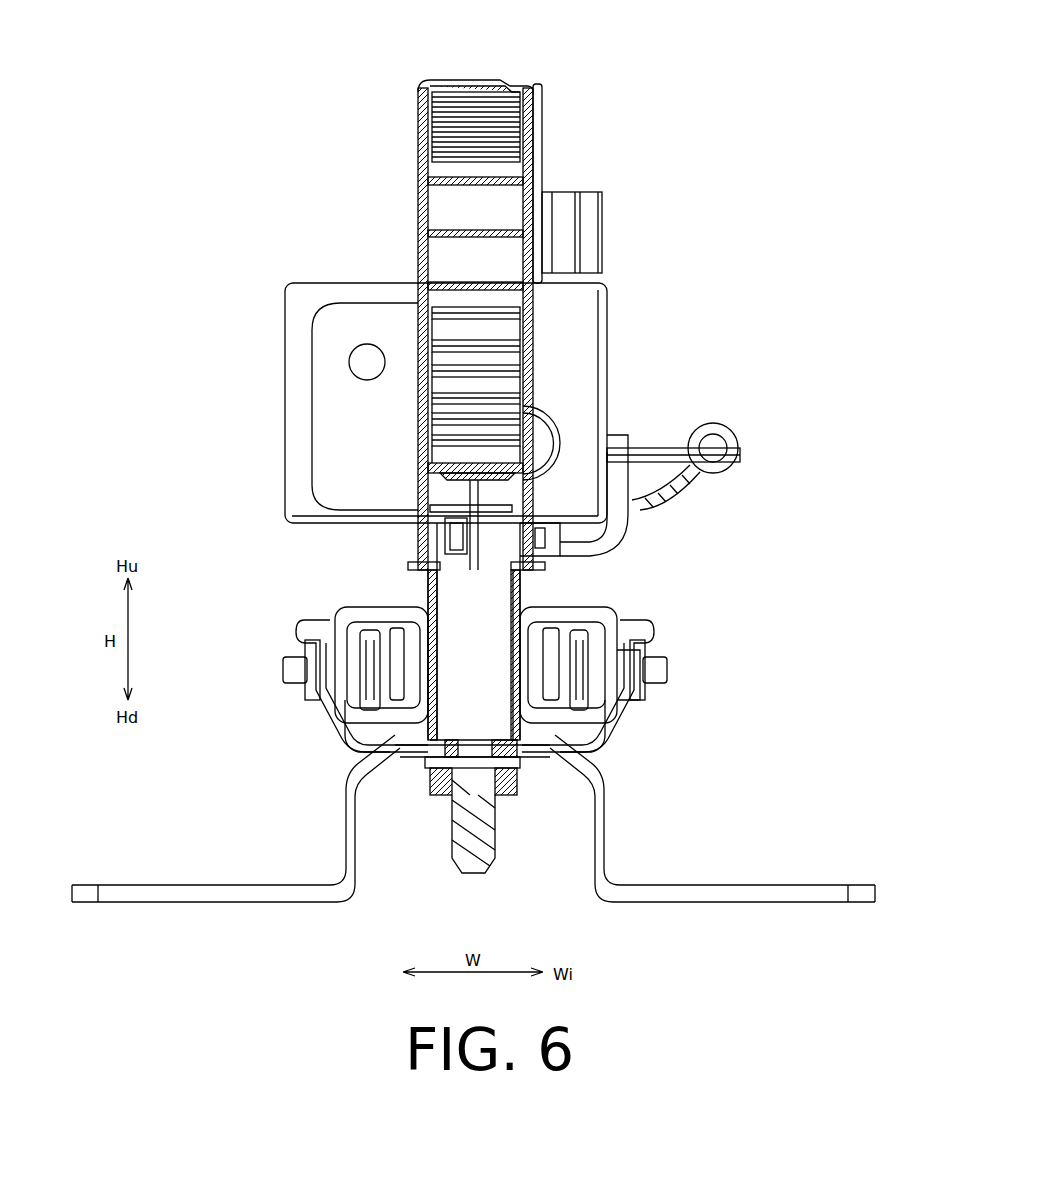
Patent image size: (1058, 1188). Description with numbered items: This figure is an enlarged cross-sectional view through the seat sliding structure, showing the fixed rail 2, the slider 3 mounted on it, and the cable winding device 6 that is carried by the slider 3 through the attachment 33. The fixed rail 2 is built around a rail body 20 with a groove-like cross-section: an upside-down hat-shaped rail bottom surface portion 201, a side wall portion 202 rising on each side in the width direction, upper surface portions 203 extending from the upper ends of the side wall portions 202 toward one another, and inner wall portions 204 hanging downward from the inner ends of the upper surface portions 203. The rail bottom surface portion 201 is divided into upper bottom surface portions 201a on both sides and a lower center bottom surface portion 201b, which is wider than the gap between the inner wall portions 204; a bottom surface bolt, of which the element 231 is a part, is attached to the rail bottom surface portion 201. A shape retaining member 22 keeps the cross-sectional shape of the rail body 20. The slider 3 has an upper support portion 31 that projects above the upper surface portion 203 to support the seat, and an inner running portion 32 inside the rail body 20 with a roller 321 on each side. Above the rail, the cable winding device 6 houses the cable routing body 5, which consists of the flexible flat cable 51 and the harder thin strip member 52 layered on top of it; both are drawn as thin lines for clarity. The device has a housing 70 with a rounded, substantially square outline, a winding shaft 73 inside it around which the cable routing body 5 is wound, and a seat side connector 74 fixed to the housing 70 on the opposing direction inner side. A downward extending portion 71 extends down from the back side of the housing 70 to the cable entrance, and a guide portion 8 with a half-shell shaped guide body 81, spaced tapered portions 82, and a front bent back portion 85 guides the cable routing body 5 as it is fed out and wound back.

The cable winding device 6 is at (346, 91).
The housing 70 is at (493, 78).
The winding shaft 73 is at (440, 206).
The cable routing body 5 is at (533, 120).
The seat side connector 74 is at (600, 192).
The attachment 33 is at (608, 345).
The downward extending portion 71 is at (445, 495).
The guide portion 8 is at (463, 525).
The guide body 81 is at (505, 530).
The tapered portions 82 is at (497, 615).
The upper support portion 31 is at (668, 424).
The slider 3 is at (708, 510).
The fixed rail 2 is at (745, 580).
The upper surface portions 203 is at (365, 607).
The inner wall portions 204 is at (392, 625).
The rail body 20 is at (650, 625).
The roller 321 is at (305, 648).
The side wall portion 202 is at (300, 668).
The shape retaining member 22 is at (640, 690).
The front bent back portion 85 is at (605, 718).
The upper bottom surface portions 201a is at (350, 750).
The center bottom surface portion 201b is at (600, 785).
The rail bottom surface portion 201 is at (738, 745).
The inner running portion 32 is at (345, 745).
The thin strip member 52 is at (360, 770).
The flexible flat cable 51 is at (445, 760).
The washer 231 is at (450, 780).